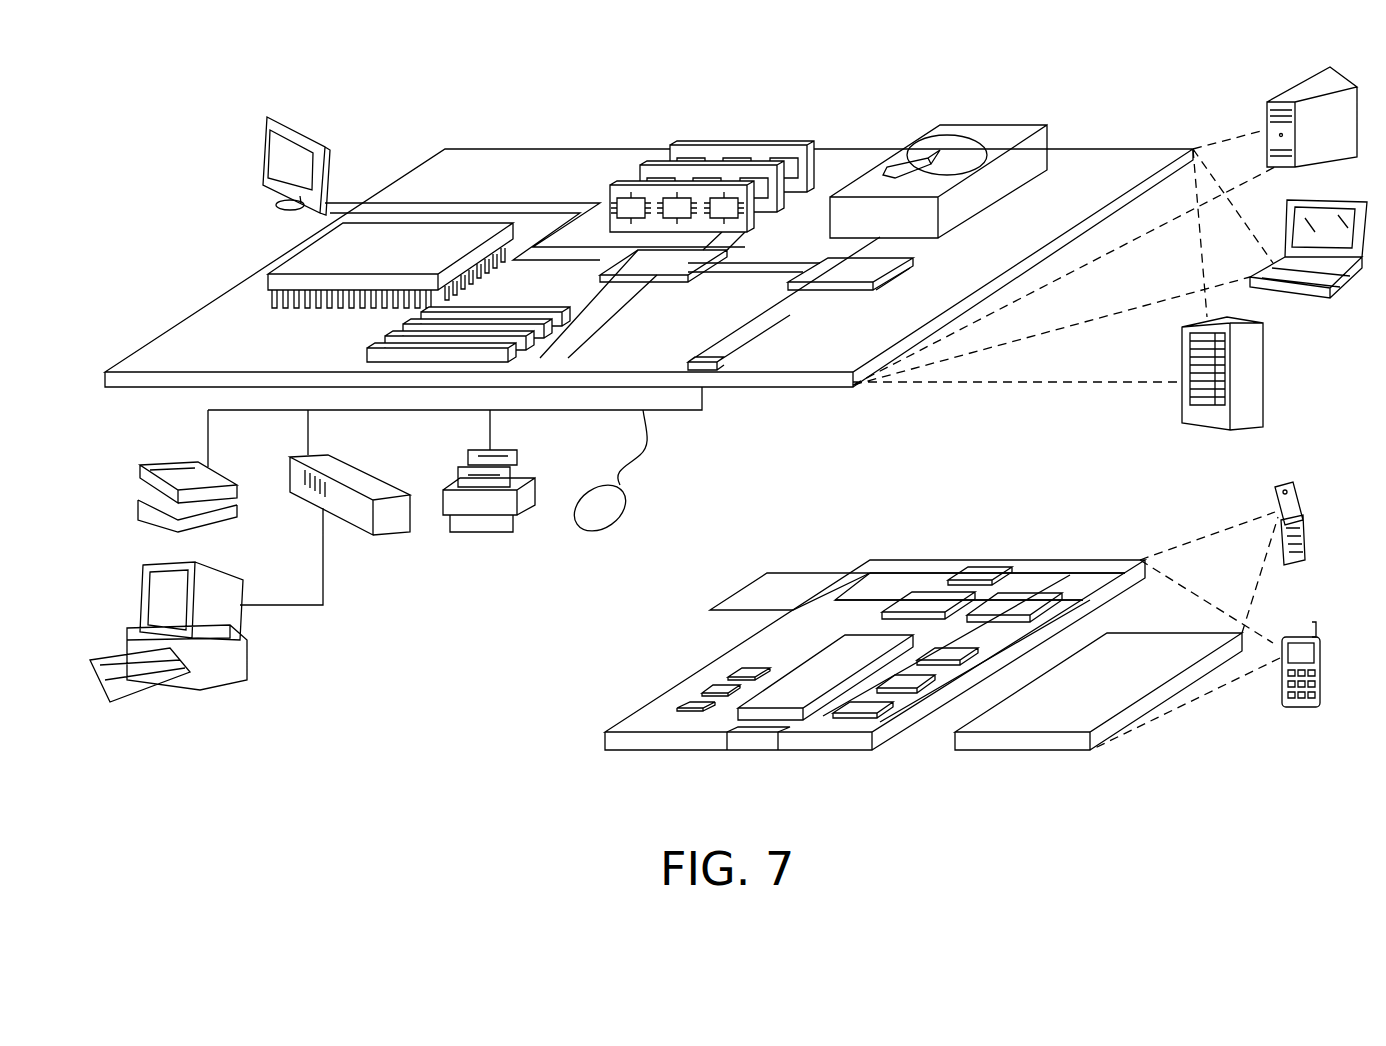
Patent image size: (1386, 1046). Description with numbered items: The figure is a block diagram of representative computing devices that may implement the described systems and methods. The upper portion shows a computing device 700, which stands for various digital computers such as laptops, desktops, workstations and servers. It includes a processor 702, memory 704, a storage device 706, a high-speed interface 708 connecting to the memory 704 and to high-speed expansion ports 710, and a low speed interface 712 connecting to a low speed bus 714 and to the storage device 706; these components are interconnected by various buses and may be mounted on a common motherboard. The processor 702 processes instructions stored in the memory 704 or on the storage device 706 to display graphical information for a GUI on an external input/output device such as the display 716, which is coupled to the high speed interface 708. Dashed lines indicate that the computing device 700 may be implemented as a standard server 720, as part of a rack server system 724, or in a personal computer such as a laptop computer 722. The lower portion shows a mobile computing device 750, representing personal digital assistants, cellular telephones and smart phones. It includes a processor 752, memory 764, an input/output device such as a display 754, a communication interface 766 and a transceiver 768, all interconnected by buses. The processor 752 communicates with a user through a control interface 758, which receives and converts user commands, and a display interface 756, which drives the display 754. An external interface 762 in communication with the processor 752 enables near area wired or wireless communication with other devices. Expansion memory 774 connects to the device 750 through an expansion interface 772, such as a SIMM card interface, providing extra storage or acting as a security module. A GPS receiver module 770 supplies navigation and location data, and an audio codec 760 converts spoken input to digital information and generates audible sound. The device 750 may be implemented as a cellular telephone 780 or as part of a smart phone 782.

The computing device 700 is at (398, 98).
The processor 702 is at (292, 252).
The memory 704 is at (745, 145).
The storage device 706 is at (978, 127).
The high-speed interface 708 is at (680, 272).
The high-speed expansion ports 710 is at (393, 330).
The low speed interface 712 is at (822, 268).
The low speed bus 714 is at (706, 357).
The display 716 is at (265, 115).
The standard server 720 is at (1288, 93).
The laptop computer 722 is at (1343, 198).
The rack server system 724 is at (1268, 372).
The computing device 750 is at (563, 752).
The processor 752 is at (795, 683).
The display 754 is at (1135, 653).
The display interface 756 is at (877, 707).
The control interface 758 is at (913, 683).
The audio codec 760 is at (953, 648).
The external interface 762 is at (755, 737).
The memory 764 is at (707, 687).
The communication interface 766 is at (928, 595).
The transceiver 768 is at (1022, 595).
The GPS receiver module 770 is at (982, 570).
The expansion interface 772 is at (853, 573).
The expansion memory 774 is at (766, 572).
The cellular telephone 780 is at (1285, 483).
The smart phone 782 is at (1294, 637).